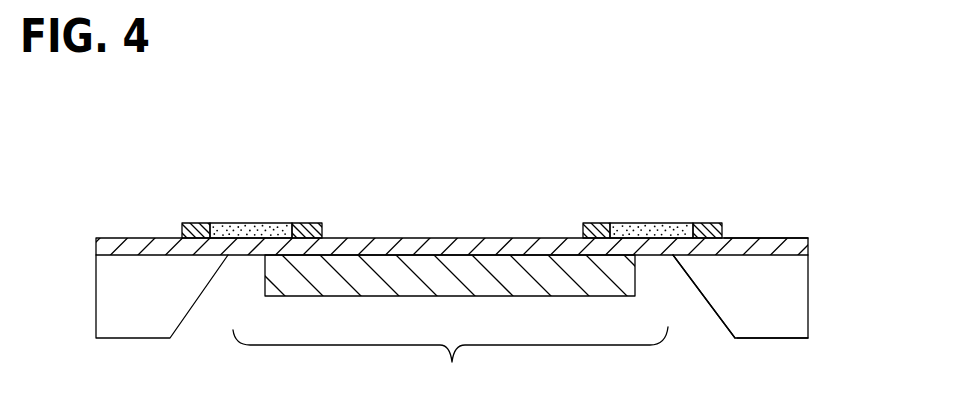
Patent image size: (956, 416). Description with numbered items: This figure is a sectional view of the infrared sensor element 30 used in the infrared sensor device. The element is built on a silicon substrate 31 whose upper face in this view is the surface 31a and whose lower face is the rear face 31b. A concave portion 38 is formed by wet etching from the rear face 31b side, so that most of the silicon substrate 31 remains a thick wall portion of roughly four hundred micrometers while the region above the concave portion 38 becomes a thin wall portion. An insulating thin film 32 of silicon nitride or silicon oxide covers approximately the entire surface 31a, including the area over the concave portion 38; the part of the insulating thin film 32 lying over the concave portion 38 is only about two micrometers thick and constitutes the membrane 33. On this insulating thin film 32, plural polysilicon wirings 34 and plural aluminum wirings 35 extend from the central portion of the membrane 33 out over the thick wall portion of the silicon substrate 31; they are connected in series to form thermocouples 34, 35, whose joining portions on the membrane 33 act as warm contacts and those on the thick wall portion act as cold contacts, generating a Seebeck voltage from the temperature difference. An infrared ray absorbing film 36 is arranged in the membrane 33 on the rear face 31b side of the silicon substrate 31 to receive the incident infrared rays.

The infrared sensor element 30 is at (727, 102).
The silicon substrate 31 is at (798, 293).
The surface of substrate 31a is at (775, 239).
The rear face of substrate 31b is at (773, 338).
The insulating thin film 32 is at (745, 250).
The membrane 33 is at (450, 360).
The polysilicon wiring 34 is at (236, 232).
The aluminum wiring 35 is at (198, 223).
The infrared ray absorbing film 36 is at (443, 292).
The concave portion 38 is at (702, 295).